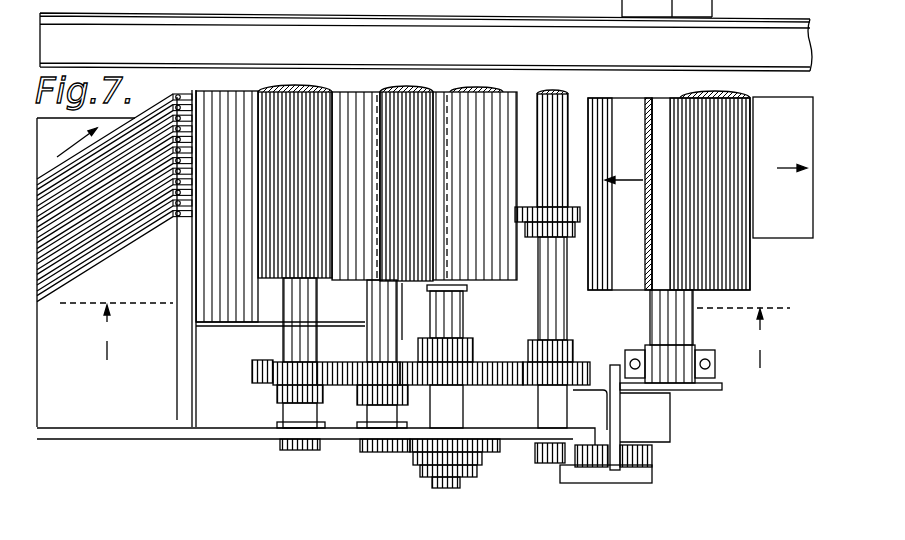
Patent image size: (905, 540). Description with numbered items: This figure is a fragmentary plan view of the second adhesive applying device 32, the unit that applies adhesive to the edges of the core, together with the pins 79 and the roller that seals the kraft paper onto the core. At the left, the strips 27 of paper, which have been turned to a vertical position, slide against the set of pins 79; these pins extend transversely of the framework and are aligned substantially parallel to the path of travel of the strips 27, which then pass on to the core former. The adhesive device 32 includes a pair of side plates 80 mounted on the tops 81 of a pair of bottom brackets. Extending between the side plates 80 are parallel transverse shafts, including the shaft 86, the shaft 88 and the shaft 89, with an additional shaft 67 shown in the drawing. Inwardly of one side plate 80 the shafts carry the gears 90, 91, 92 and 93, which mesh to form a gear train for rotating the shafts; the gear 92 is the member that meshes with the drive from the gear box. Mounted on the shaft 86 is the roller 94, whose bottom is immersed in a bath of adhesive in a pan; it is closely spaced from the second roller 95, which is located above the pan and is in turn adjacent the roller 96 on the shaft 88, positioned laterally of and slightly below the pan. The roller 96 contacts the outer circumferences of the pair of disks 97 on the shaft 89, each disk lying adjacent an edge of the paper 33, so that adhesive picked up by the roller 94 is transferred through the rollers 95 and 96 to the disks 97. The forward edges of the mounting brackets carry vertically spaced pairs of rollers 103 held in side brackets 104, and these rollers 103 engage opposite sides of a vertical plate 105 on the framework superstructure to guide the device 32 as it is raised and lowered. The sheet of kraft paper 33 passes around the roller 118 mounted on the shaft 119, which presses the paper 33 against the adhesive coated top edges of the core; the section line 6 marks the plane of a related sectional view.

The section line 6- 6 is at (425, 335).
The paper strips 27 is at (163, 202).
The second adhesive applying device 32 is at (183, 328).
The sheet of kraft paper 33 is at (627, 200).
The shaft 67 is at (372, 300).
The pins 79 is at (178, 212).
The side plates 80 is at (108, 432).
The tops of bottom brackets 81 is at (197, 367).
The transverse shaft 86 is at (288, 333).
The transverse shaft 88 is at (447, 325).
The transverse shaft 89 is at (554, 95).
The gear 90 is at (255, 378).
The gear 91 is at (356, 368).
The gear 92 is at (492, 372).
The gear 93 is at (575, 372).
The roller 94 is at (310, 95).
The second roller 95 is at (413, 91).
The roller 96 is at (498, 92).
The disks 97 is at (528, 225).
The rollers 103 is at (573, 465).
The side brackets 104 is at (612, 472).
The vertical plate 105 is at (615, 365).
The roller 118 is at (735, 90).
The shaft 119 is at (672, 330).